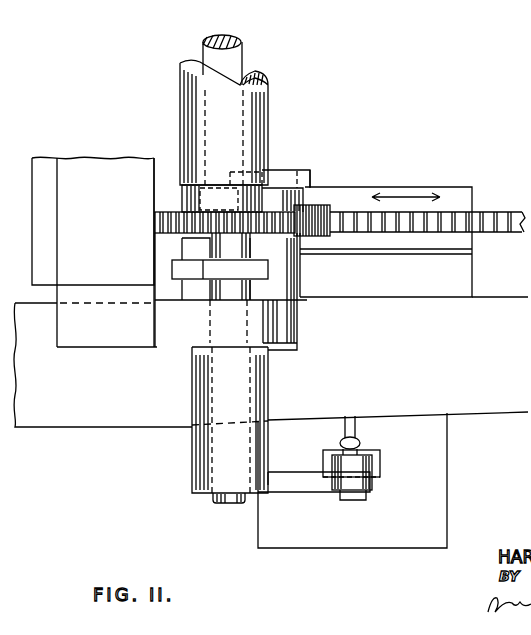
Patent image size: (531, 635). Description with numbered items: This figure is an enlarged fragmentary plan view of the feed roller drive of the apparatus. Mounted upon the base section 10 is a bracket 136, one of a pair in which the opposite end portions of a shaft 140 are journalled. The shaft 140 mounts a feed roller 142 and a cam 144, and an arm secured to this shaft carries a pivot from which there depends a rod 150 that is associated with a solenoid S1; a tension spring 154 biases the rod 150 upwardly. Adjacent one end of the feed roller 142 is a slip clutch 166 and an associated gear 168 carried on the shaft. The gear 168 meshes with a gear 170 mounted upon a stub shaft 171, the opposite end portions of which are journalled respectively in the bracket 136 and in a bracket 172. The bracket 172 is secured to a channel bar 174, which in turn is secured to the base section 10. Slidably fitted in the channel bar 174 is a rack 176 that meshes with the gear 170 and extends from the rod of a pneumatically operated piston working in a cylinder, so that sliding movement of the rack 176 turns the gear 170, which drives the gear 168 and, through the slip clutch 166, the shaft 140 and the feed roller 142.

The base section 10 is at (123, 410).
The bracket 136 is at (223, 325).
The shaft 140 is at (240, 46).
The feed roller 142 is at (268, 116).
The cam 144 is at (188, 280).
The rod 150 is at (372, 462).
The tension spring 154 is at (343, 441).
The slip clutch 166 is at (192, 180).
The gear 168 is at (296, 238).
The gear 170 is at (322, 210).
The stub shaft 171 is at (290, 348).
The bracket 172 is at (283, 174).
The channel bar 174 is at (460, 192).
The rack 176 is at (460, 212).
The solenoid S1 is at (380, 537).